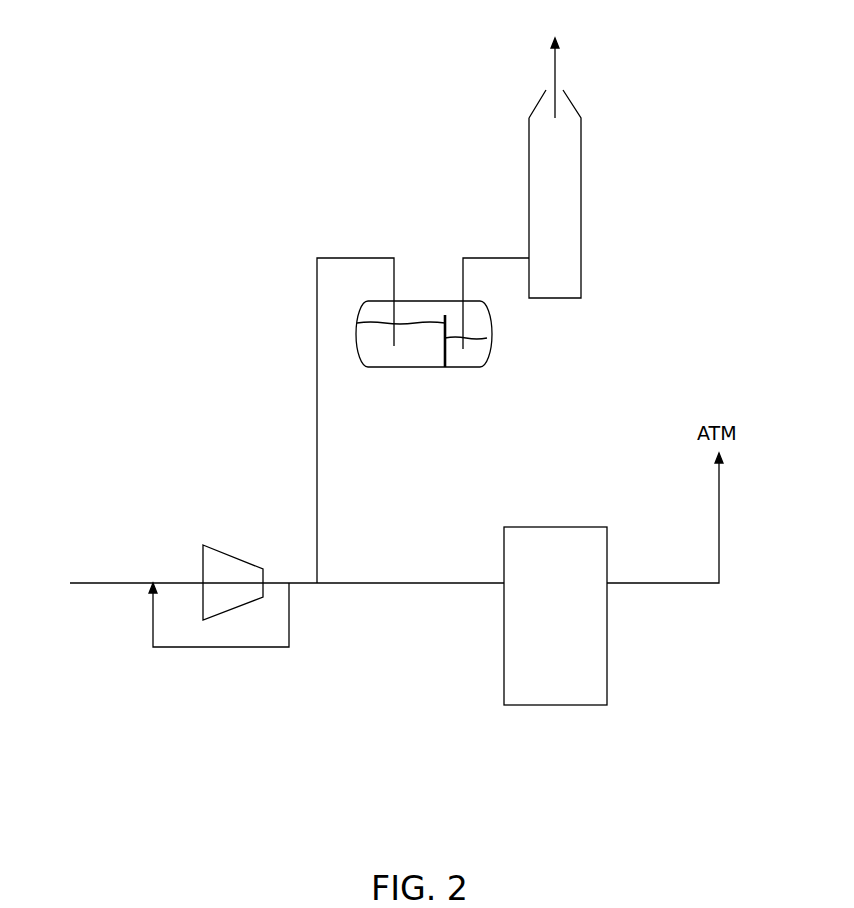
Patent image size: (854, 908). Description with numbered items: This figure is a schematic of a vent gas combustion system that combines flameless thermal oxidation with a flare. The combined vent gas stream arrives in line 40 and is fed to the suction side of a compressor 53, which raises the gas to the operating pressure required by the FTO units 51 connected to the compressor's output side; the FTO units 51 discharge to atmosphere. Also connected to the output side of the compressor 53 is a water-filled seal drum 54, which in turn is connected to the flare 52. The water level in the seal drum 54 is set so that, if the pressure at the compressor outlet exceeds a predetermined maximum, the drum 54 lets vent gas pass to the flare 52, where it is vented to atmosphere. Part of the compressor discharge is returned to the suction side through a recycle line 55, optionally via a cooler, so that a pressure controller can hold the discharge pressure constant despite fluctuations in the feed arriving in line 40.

The line 40 is at (115, 585).
The FTO units 51 is at (583, 657).
The flare 52 is at (581, 181).
The compressor 53 is at (222, 548).
The seal drum 54 is at (488, 348).
The recycle line 55 is at (230, 650).